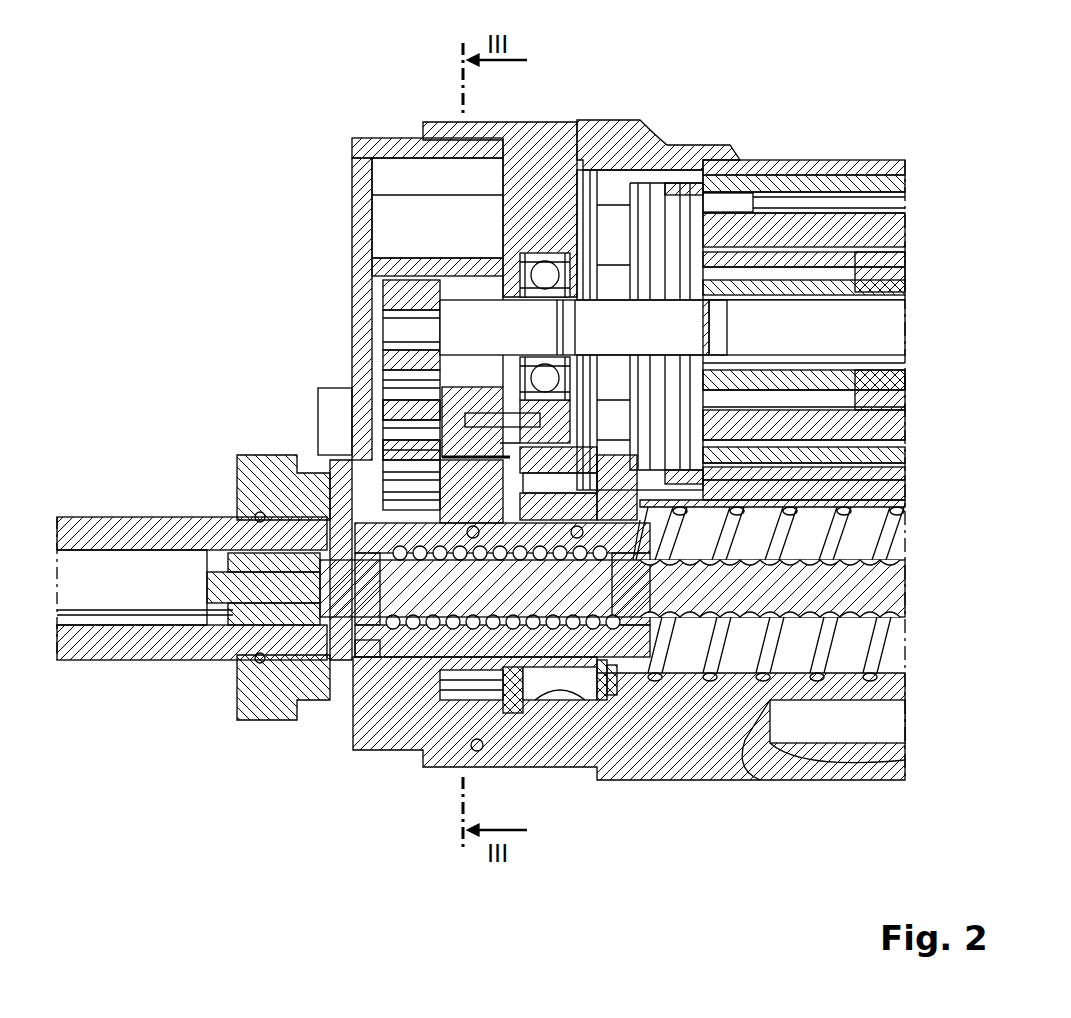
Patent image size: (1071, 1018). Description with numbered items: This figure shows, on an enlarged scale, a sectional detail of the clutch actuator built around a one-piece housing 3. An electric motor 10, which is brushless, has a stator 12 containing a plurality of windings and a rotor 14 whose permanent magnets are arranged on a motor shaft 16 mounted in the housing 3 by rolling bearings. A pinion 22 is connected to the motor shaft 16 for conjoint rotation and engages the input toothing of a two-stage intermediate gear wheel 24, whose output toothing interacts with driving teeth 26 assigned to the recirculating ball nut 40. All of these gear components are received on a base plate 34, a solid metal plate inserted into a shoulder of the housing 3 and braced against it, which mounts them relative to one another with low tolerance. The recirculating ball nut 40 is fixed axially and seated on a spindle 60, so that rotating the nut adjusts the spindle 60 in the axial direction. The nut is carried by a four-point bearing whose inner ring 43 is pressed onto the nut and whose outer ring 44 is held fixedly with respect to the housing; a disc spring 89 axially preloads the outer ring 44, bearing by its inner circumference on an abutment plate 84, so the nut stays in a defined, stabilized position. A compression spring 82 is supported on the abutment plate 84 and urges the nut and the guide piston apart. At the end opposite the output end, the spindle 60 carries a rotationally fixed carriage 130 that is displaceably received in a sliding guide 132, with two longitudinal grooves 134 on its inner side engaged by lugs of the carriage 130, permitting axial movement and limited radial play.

The electric motor 10 is at (754, 76).
The stator 12 is at (832, 190).
The rotor 14 is at (885, 232).
The motor shaft 16 is at (618, 305).
The housing 3 is at (598, 140).
The base plate 34 is at (543, 175).
The pinion 22 is at (400, 300).
The intermediate gear wheel 24 is at (392, 408).
The driving teeth 26 is at (450, 700).
The recirculating ball nut 40 is at (378, 645).
The inner ring 43 is at (568, 685).
The outer ring 44 is at (540, 713).
The spindle 60 is at (890, 583).
The compression spring 82 is at (890, 530).
The abutment plate 84 is at (605, 675).
The disc spring 89 is at (612, 690).
The carriage 130 is at (250, 612).
The sliding guide 132 is at (135, 530).
The longitudinal grooves 134 is at (118, 628).